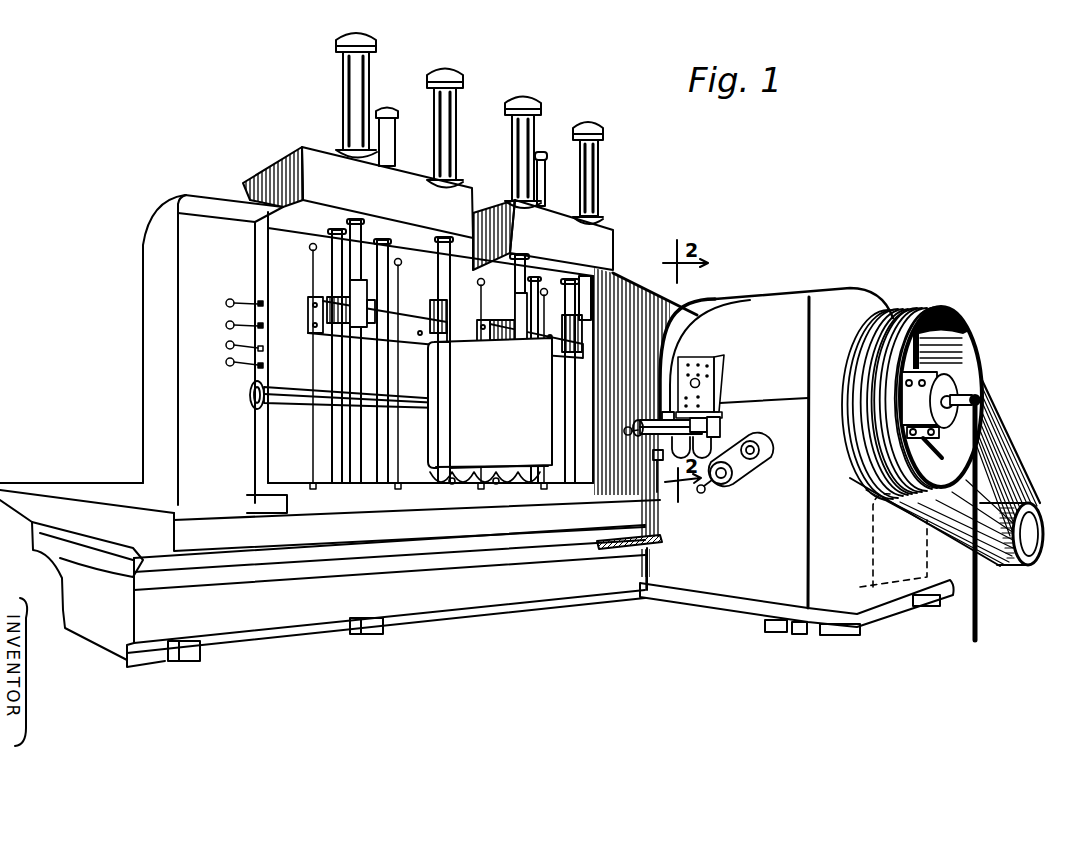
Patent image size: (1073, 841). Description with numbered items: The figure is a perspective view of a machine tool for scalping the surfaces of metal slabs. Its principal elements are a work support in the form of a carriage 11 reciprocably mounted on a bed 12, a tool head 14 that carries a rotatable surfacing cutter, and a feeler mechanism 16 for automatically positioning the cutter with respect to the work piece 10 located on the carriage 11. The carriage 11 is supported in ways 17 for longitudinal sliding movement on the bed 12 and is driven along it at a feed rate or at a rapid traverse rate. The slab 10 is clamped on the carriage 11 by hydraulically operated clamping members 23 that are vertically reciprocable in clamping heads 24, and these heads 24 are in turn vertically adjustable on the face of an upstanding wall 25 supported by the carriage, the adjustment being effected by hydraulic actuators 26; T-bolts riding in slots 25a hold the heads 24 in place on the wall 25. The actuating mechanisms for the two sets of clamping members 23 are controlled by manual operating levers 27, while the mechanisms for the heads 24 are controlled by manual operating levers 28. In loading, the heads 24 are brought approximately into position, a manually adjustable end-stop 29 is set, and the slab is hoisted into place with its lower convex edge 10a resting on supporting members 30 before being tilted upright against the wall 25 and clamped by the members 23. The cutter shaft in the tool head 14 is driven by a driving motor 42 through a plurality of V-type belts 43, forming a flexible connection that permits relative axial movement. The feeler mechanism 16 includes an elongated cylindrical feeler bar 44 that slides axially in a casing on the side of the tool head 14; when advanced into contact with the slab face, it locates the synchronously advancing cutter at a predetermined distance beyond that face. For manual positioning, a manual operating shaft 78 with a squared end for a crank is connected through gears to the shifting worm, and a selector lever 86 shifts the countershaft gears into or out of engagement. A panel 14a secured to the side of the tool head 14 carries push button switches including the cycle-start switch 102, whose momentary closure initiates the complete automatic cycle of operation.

The work piece 10 is at (534, 424).
The lower convex edge 10a is at (467, 468).
The carriage 11 is at (72, 482).
The bed 12 is at (267, 613).
The tool head 14 is at (795, 303).
The panel 14a is at (710, 356).
The feeler mechanism 16 is at (649, 406).
The ways 17 is at (130, 552).
The clamping members 23 is at (354, 320).
The clamping heads 24 is at (308, 323).
The upstanding wall 25 is at (255, 451).
The slots 25a is at (353, 437).
The hydraulic actuators 26 is at (391, 112).
The manual operating levers 27 is at (243, 318).
The manual operating levers 28 is at (246, 348).
The end-stop 29 is at (446, 405).
The supporting members 30 is at (513, 482).
The driving motor 42 is at (871, 545).
The V-type belts 43 is at (1013, 470).
The feeler bar 44 is at (625, 430).
The manual operating shaft 78 is at (759, 466).
The selector lever 86 is at (700, 493).
The cycle-start switch 102 is at (701, 383).